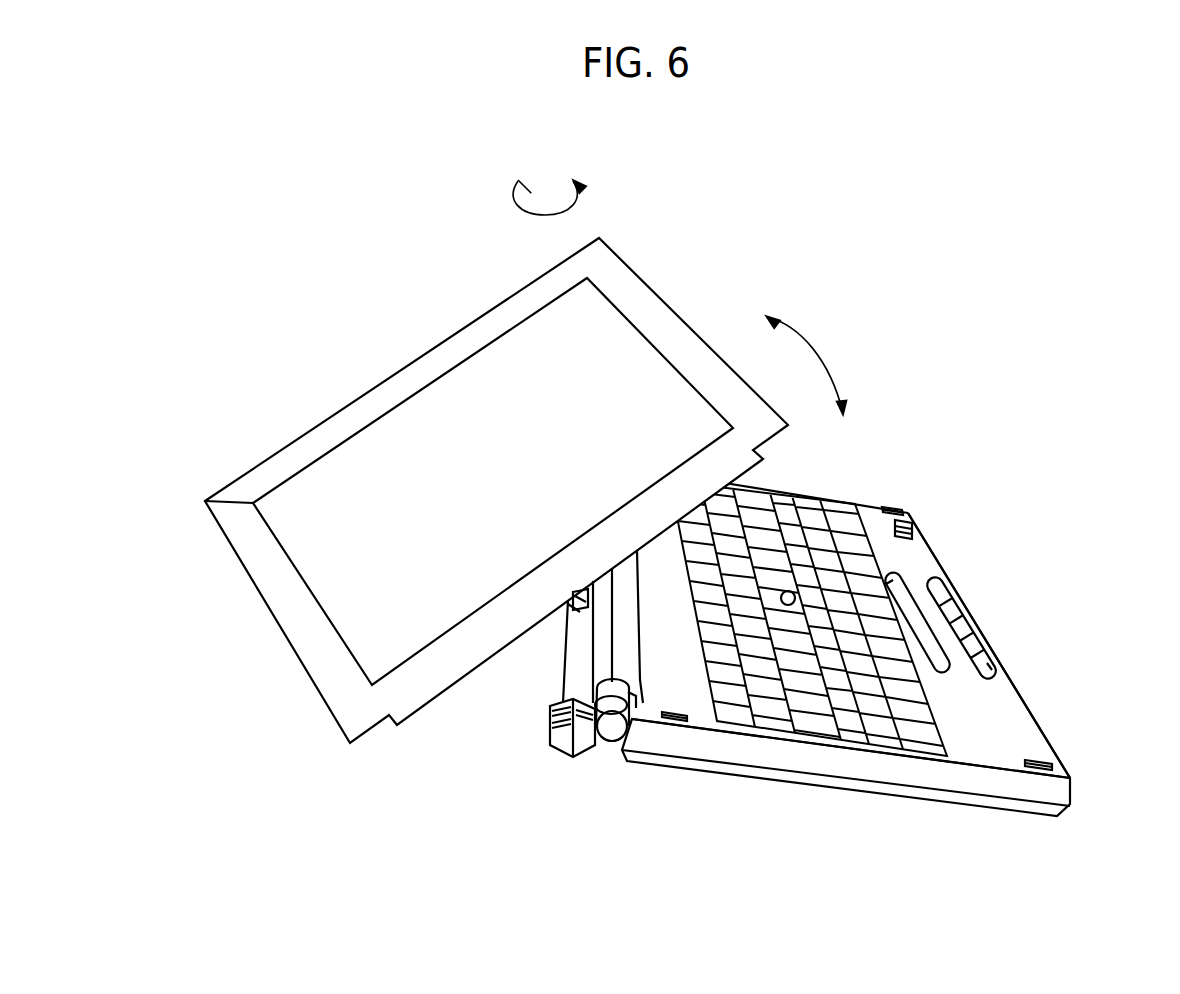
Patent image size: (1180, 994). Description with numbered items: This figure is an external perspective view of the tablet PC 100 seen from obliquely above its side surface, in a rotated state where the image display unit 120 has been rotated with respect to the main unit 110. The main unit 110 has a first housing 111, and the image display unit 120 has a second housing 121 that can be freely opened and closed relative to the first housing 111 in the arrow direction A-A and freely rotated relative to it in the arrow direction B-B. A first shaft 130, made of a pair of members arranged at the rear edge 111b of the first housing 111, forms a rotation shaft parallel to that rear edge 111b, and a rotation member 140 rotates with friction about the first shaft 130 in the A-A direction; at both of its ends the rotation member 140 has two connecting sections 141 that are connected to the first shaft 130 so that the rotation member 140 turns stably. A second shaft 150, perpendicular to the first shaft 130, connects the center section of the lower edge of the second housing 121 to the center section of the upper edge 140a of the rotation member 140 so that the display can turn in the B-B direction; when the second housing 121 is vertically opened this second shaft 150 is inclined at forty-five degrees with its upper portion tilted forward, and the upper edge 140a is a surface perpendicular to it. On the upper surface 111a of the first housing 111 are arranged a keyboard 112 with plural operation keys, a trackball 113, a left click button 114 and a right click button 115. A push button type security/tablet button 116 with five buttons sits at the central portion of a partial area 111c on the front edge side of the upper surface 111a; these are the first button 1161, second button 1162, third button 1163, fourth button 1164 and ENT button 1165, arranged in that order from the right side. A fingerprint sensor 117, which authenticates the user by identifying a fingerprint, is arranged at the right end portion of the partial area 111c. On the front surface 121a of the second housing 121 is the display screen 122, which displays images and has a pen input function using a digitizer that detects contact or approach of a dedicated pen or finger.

The tablet PC 100 is at (864, 205).
The main unit 110 is at (872, 766).
The first housing 111 is at (922, 777).
The upper surface 111a is at (698, 692).
The rear edge 111b is at (655, 696).
The partial area 111c is at (1002, 749).
The keyboard 112 is at (797, 697).
The trackball 113 is at (789, 590).
The left click button 114 is at (945, 670).
The right click button 115 is at (891, 576).
The security/tablet button 116 is at (1036, 531).
The first button 1161 is at (945, 593).
The second button 1162 is at (962, 607).
The third button 1163 is at (972, 632).
The fourth button 1164 is at (986, 648).
The ENT button 1165 is at (997, 670).
The fingerprint sensor 117 is at (914, 528).
The image display unit 120 is at (318, 655).
The second housing 121 is at (283, 603).
The front surface 121a is at (231, 506).
The display screen 122 is at (617, 347).
The first shaft 130 is at (611, 730).
The rotation member 140 is at (562, 688).
The upper edge 140a is at (575, 657).
The connecting section 141 is at (628, 706).
The second shaft 150 is at (575, 587).